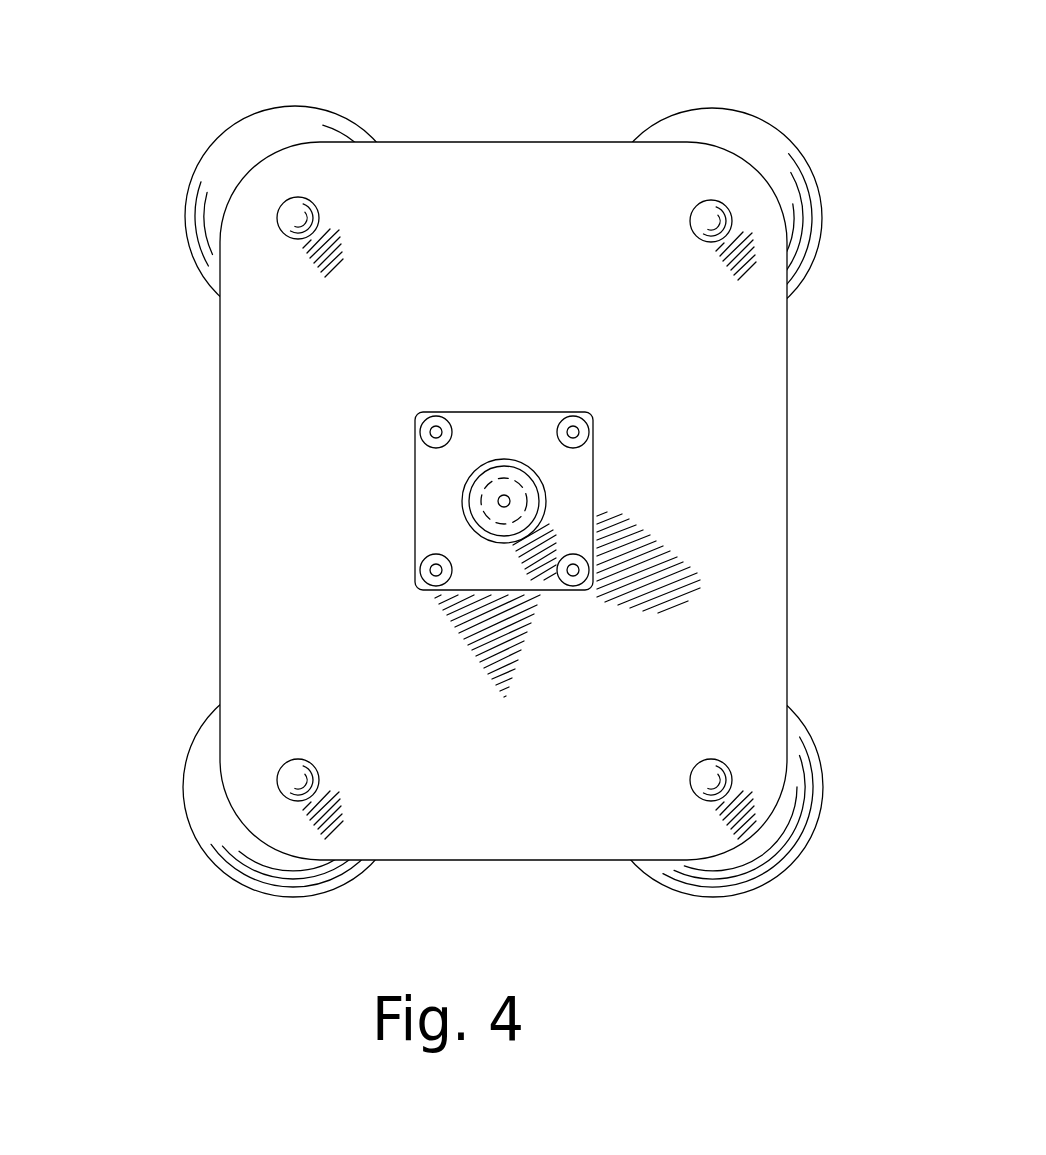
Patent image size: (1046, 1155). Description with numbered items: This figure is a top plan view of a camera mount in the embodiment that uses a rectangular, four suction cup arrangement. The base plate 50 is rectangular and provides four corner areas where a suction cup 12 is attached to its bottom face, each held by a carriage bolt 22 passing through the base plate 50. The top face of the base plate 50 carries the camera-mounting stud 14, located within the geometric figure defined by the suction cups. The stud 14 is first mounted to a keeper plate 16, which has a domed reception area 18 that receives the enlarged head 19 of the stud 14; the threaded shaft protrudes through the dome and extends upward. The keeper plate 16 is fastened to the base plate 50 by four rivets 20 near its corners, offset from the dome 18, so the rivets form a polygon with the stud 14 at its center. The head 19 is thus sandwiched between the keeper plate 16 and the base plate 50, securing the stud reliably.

The suction cup 12 is at (225, 170).
The camera-mounting stud 14 is at (500, 503).
The keeper plate 16 is at (582, 505).
The domed reception area 18 is at (484, 496).
The enlarged head 19 is at (490, 478).
The rivets 20 is at (431, 431).
The carriage bolts 22 is at (278, 215).
The base plate 50 is at (443, 175).